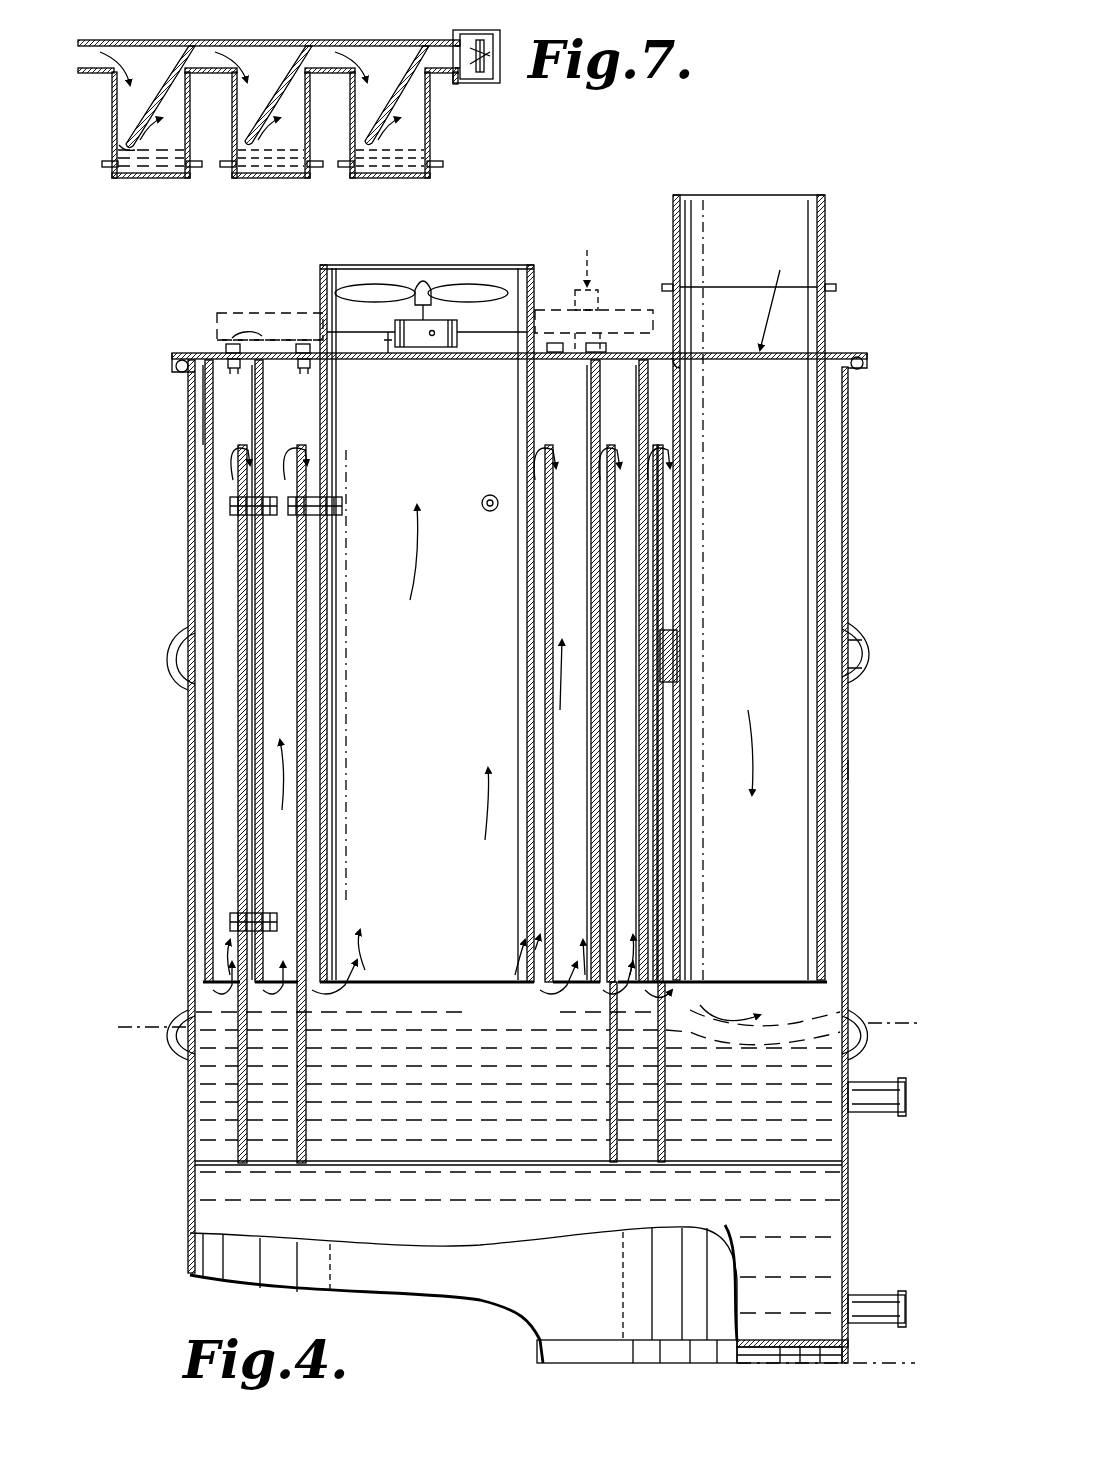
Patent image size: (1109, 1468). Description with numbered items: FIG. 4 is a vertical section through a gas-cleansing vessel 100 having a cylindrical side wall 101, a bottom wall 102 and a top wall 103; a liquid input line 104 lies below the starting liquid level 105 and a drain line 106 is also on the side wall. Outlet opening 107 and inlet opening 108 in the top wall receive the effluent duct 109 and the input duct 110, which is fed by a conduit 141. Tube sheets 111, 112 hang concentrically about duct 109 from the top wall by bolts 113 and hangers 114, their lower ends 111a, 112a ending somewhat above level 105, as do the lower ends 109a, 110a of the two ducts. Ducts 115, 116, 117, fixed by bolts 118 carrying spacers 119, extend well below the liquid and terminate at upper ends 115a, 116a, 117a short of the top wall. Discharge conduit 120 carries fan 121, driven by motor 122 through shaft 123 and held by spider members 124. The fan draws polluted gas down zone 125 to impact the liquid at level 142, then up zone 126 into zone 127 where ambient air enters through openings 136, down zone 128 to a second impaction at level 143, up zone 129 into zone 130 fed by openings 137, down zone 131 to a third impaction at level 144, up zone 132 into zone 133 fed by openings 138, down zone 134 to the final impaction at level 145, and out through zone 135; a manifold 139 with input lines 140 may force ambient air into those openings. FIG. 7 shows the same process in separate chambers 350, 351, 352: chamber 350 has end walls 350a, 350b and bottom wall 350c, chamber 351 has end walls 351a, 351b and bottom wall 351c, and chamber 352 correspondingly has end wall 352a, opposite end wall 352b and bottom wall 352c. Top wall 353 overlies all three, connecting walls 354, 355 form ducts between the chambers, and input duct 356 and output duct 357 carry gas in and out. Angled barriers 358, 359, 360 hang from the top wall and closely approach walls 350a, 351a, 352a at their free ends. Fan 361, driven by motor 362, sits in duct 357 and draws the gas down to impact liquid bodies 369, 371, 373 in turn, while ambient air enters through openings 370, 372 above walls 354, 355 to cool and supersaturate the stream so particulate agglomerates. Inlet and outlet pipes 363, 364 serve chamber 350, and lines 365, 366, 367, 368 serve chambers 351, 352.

In FIG. 4, the vessel 100 is at (864, 453).
In FIG. 4, the side wall 101 is at (848, 771).
In FIG. 4, the bottom wall 102 is at (790, 1343).
In FIG. 4, the top wall 103 is at (845, 353).
In FIG. 4, the liquid input flow line 104 is at (890, 1112).
In FIG. 4, the starting liquid level 105 is at (898, 1022).
In FIG. 4, the drain line 106 is at (868, 1295).
In FIG. 4, the outlet opening 107 is at (524, 356).
In FIG. 4, the inlet opening 108 is at (818, 364).
In FIG. 4, the effluent duct 109 is at (527, 603).
In FIG. 4, the housing bottom edge 109a is at (465, 985).
In FIG. 4, the input flow duct 110 is at (817, 491).
In FIG. 4, the inlet pipe lower end 110a is at (775, 993).
In FIG. 4, the tube sheet 111 is at (263, 422).
In FIG. 4, the baffle lower edge 111a is at (535, 1012).
In FIG. 4, the tube sheet 112 is at (205, 414).
In FIG. 4, the baffle lower edge 112a is at (650, 975).
In FIG. 4, the bolt 113 is at (235, 334).
In FIG. 4, the hanger 114 is at (306, 413).
In FIG. 4, the cylindrical duct 115 is at (545, 1162).
In FIG. 4, the upper end of duct 115 115a is at (545, 446).
In FIG. 4, the cylindrical duct 116 is at (606, 1165).
In FIG. 4, the upper end of duct 116 116a is at (612, 442).
In FIG. 4, the cylindrical duct 117 is at (658, 1165).
In FIG. 4, the upper end of duct 117 117a is at (680, 457).
In FIG. 4, the bolt 118 is at (484, 497).
In FIG. 4, the spacer 119 is at (232, 508).
In FIG. 4, the discharge conduit 120 is at (533, 268).
In FIG. 4, the fan 121 is at (478, 290).
In FIG. 4, the motor 122 is at (440, 348).
In FIG. 4, the shaft 123 is at (432, 284).
In FIG. 4, the spider member 124 is at (386, 348).
In FIG. 4, the zone 125 is at (806, 728).
In FIG. 4, the zone 126 is at (858, 647).
In FIG. 4, the zone 127 is at (665, 426).
In FIG. 4, the zone 128 is at (663, 581).
In FIG. 4, the zone 129 is at (646, 863).
In FIG. 4, the zone 130 is at (642, 393).
In FIG. 4, the zone 131 is at (592, 598).
In FIG. 4, the zone 132 is at (565, 859).
In FIG. 4, the zone 133 is at (527, 423).
In FIG. 4, the zone 134 is at (546, 721).
In FIG. 4, the zone 135 is at (425, 880).
In FIG. 4, the ambient air input openings 136 is at (681, 368).
In FIG. 4, the ambient air input openings 137 is at (647, 325).
In FIG. 4, the ambient air input openings 138 is at (540, 356).
In FIG. 4, the manifold 139 is at (224, 313).
In FIG. 4, the input line 140 is at (600, 290).
In FIG. 4, the conduit 141 is at (826, 251).
In FIG. 4, the liquid level 142 is at (775, 1040).
In FIG. 4, the modified water level 143 is at (642, 1001).
In FIG. 4, the modified liquid level 144 is at (545, 1000).
In FIG. 4, the modified water level 145 is at (398, 1004).
In FIG. 7, the chamber 350 is at (143, 203).
In FIG. 7, the end wall 350a is at (114, 100).
In FIG. 7, the end wall 350b is at (191, 125).
In FIG. 7, the bottom wall 350c is at (163, 180).
In FIG. 7, the chamber 351 is at (290, 210).
In FIG. 7, the end wall 351a is at (230, 110).
In FIG. 7, the end wall 351b is at (311, 95).
In FIG. 7, the bottom wall 351c is at (288, 180).
In FIG. 7, the chamber 352 is at (400, 200).
In FIG. 7, the end wall 352a is at (355, 112).
In FIG. 7, the trough wall 352b is at (431, 110).
In FIG. 7, the trough bottom 352c is at (430, 178).
In FIG. 7, the top wall 353 is at (315, 45).
In FIG. 7, the connecting wall 354 is at (222, 66).
In FIG. 7, the connecting wall 355 is at (350, 64).
In FIG. 7, the input flow duct 356 is at (96, 40).
In FIG. 7, the output flow duct 357 is at (442, 38).
In FIG. 7, the barrier 358 is at (176, 67).
In FIG. 7, the barrier 359 is at (296, 66).
In FIG. 7, the barrier 360 is at (414, 67).
In FIG. 7, the fan 361 is at (478, 38).
In FIG. 7, the motor 362 is at (492, 72).
In FIG. 7, the inlet pipe 363 is at (105, 168).
In FIG. 7, the outlet pipe 364 is at (198, 168).
In FIG. 7, the inlet line 365 is at (224, 168).
In FIG. 7, the outlet line 366 is at (316, 170).
In FIG. 7, the inlet line 367 is at (340, 170).
In FIG. 7, the outlet line 368 is at (445, 160).
In FIG. 7, the liquid body 369 is at (120, 148).
In FIG. 7, the opening 370 is at (215, 42).
In FIG. 7, the liquid body 371 is at (290, 150).
In FIG. 7, the opening 372 is at (330, 42).
In FIG. 7, the water body 373 is at (420, 145).